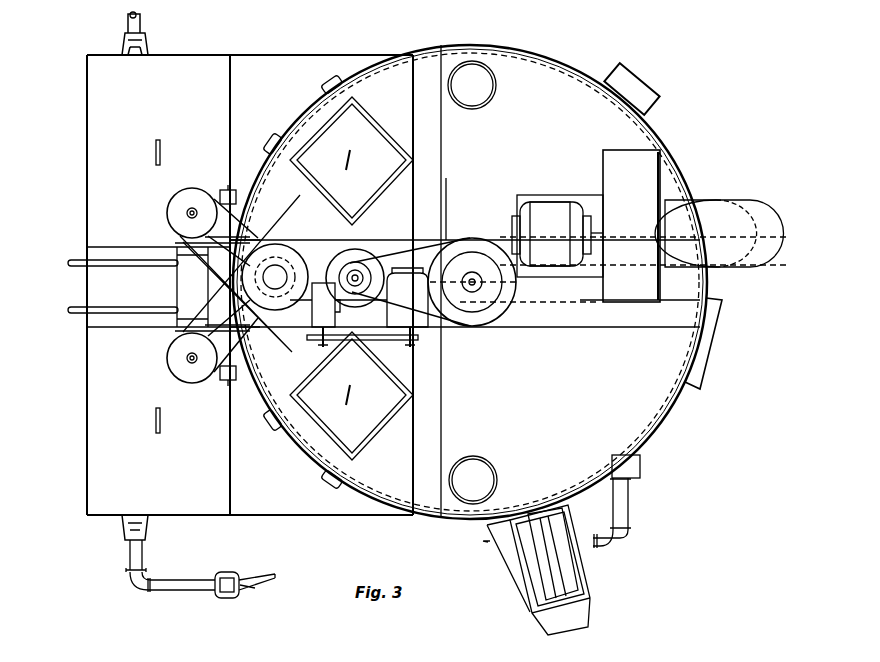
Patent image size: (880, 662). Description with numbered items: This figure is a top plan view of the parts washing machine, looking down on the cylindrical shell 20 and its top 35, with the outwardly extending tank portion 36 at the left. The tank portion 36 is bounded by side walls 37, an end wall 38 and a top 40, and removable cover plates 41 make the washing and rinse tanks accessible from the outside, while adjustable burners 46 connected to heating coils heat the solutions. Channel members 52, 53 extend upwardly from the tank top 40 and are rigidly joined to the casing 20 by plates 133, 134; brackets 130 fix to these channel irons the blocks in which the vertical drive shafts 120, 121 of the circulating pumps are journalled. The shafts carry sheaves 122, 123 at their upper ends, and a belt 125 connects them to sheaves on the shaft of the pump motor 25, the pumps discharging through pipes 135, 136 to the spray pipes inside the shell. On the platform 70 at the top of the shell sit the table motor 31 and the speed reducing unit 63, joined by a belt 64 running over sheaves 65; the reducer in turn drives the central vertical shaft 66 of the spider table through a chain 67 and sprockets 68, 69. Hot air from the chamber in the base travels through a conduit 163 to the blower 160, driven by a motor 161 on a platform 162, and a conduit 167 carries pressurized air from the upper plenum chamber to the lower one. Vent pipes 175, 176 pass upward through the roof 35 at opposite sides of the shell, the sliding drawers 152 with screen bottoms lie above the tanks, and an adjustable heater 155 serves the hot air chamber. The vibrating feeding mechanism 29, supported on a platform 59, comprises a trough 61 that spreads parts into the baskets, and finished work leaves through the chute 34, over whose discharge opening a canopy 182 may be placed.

The cylindrical shell 20 is at (657, 126).
The motor 25 is at (278, 262).
The vibrating feeding mechanism 29 is at (572, 580).
The motor 31 is at (407, 297).
The chute 34 is at (705, 350).
The top 35 is at (642, 423).
The tank portion 36 is at (98, 480).
The side walls 37 is at (185, 56).
The end wall 38 is at (87, 400).
The top 40 is at (250, 204).
The removable cover plates 41 is at (138, 283).
The adjustable burners 46 is at (148, 19).
The channel member 52 is at (178, 263).
The channel member 53 is at (178, 310).
The platform 59 is at (505, 548).
The trough 61 is at (553, 554).
The speed reducing unit 63 is at (320, 312).
The belt 64 is at (362, 343).
The sheaves 65 is at (320, 343).
The central vertical shaft 66 is at (468, 284).
The chain 67 is at (407, 252).
The sprocket 68 is at (356, 270).
The sprocket 69 is at (502, 308).
The platform 70 is at (348, 262).
The vertical drive shaft 120 is at (190, 372).
The vertical drive shaft 121 is at (188, 212).
The sheave 122 is at (186, 360).
The sheave 123 is at (170, 216).
The belt 125 is at (230, 258).
The brackets 130 is at (175, 243).
The plate 133 is at (240, 273).
The plate 134 is at (246, 226).
The pipe 135 is at (248, 343).
The pipe 136 is at (222, 195).
The sliding drawer 152 is at (322, 84).
The adjustable heater 155 is at (628, 501).
The blower 160 is at (620, 162).
The motor 161 is at (547, 208).
The platform 162 is at (586, 200).
The conduit 163 is at (732, 204).
The conduit 167 is at (628, 92).
The vent pipe 175 is at (473, 480).
The vent pipe 176 is at (486, 86).
The canopy 182 is at (351, 278).